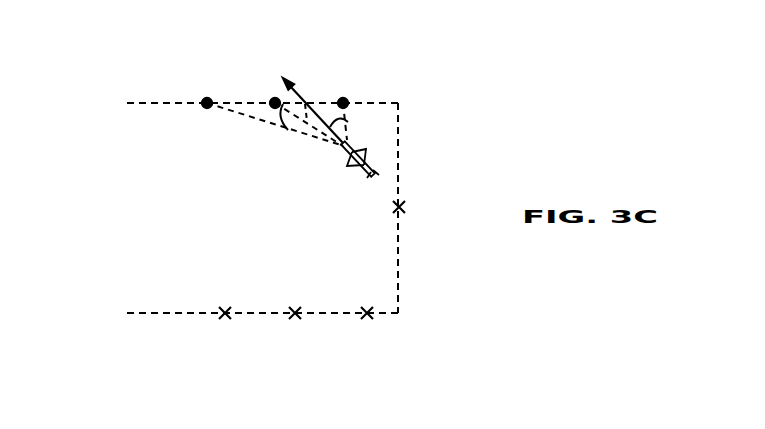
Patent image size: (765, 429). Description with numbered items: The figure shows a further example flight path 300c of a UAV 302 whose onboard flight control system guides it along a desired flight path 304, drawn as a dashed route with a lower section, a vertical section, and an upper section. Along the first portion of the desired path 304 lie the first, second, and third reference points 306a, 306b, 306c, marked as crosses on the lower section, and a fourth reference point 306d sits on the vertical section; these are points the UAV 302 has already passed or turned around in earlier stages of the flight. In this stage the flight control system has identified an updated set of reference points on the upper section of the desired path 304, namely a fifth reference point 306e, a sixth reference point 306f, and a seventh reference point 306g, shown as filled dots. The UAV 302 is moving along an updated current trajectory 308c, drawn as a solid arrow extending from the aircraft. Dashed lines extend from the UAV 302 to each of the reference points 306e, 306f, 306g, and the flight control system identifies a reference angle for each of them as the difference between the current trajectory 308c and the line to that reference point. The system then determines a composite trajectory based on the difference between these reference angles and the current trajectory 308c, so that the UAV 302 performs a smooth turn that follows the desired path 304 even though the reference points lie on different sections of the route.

The flight path 300c is at (117, 194).
The UAV 302 is at (356, 168).
The desired flight path 304 is at (143, 101).
The first reference point 306a is at (226, 320).
The second reference point 306b is at (296, 320).
The third reference point 306c is at (368, 320).
The fourth reference point 306d is at (405, 205).
The fifth reference point 306e is at (346, 99).
The sixth reference point 306f is at (271, 99).
The seventh reference point 306g is at (207, 109).
The updated current trajectory 308c is at (298, 96).